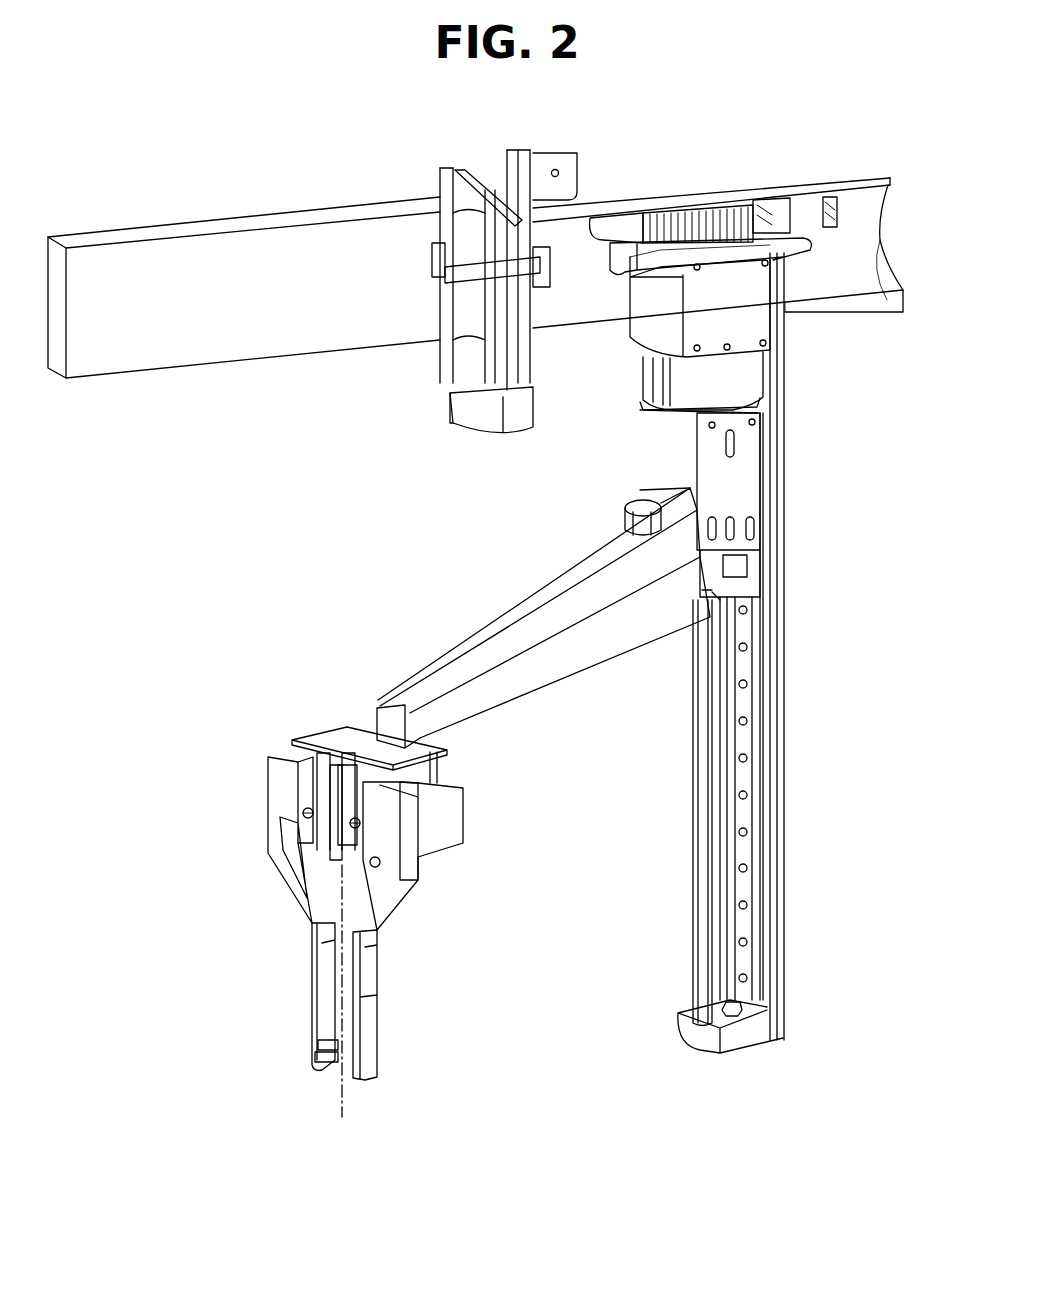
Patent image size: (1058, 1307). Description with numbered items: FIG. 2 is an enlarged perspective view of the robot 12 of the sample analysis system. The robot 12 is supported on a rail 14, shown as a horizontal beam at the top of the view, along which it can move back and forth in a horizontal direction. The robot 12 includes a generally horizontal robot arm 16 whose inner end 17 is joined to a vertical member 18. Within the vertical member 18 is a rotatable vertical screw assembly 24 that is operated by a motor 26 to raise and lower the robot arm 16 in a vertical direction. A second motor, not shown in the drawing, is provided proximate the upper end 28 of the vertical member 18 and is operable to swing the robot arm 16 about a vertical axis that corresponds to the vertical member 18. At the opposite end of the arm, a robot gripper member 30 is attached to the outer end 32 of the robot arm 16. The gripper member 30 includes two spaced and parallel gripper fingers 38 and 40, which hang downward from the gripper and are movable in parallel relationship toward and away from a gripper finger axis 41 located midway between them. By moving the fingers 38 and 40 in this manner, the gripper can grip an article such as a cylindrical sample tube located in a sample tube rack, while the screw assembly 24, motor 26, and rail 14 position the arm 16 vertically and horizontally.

The robot 12 is at (808, 572).
The rail 14 is at (888, 182).
The robot arm 16 is at (556, 569).
The inner end 17 is at (675, 478).
The vertical member 18 is at (790, 455).
The vertical screw assembly 24 is at (690, 811).
The motor 26 is at (640, 365).
The upper end 28 is at (710, 243).
The robot gripper member 30 is at (252, 817).
The outer end 32 is at (375, 718).
The gripper finger 38 is at (312, 970).
The gripper finger 40 is at (372, 977).
The gripper finger axis 41 is at (345, 1088).